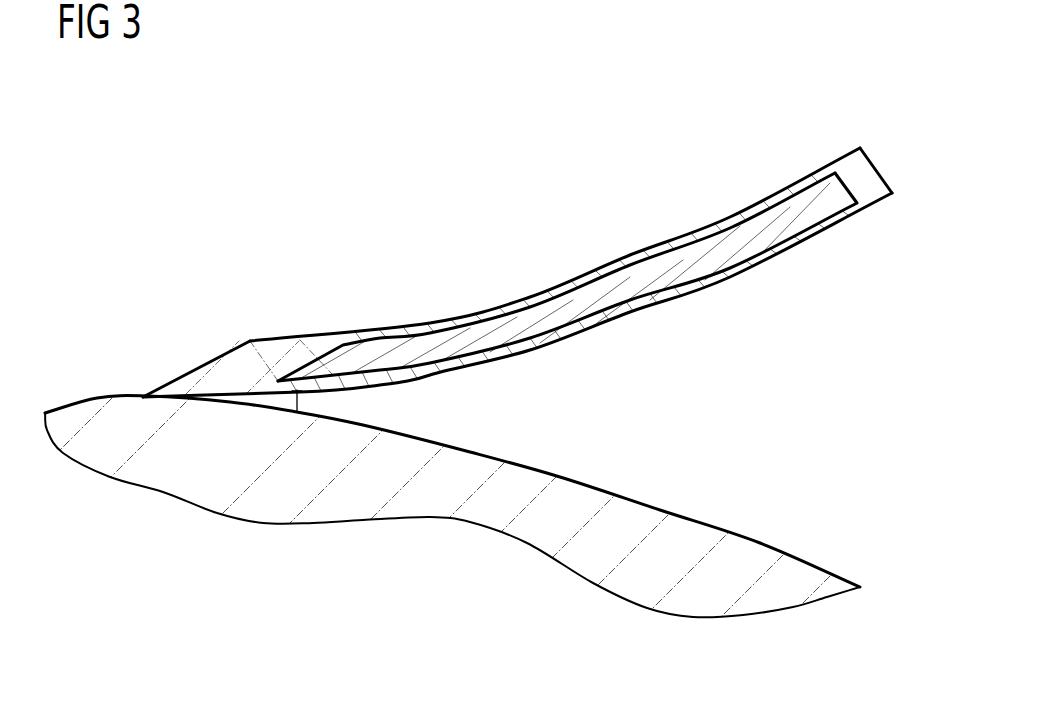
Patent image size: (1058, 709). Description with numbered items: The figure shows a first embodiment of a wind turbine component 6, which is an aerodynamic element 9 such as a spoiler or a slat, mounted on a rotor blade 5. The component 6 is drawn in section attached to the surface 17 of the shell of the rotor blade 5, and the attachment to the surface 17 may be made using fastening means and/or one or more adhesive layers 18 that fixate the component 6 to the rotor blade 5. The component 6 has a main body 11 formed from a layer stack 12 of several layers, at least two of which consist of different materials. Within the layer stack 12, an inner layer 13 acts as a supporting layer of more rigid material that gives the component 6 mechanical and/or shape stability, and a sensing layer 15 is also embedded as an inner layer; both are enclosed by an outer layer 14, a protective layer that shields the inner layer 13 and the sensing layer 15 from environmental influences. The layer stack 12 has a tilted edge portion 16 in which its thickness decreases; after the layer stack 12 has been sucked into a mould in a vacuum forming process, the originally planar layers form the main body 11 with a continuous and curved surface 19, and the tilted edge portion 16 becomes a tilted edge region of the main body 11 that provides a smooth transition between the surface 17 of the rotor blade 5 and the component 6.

The rotor blade 5 is at (529, 354).
The wind turbine component 6 is at (550, 217).
The aerodynamic element 9 is at (550, 217).
The main body 11 is at (643, 260).
The layer stack 12 is at (876, 163).
The inner layer 13 is at (640, 297).
The outer layer 14 is at (288, 350).
The sensing layer 15 is at (452, 320).
The tilted edge portion 16 is at (208, 373).
The surface 17 is at (643, 500).
The adhesive layer 18 is at (300, 400).
The continuous and curved surface 19 is at (757, 265).